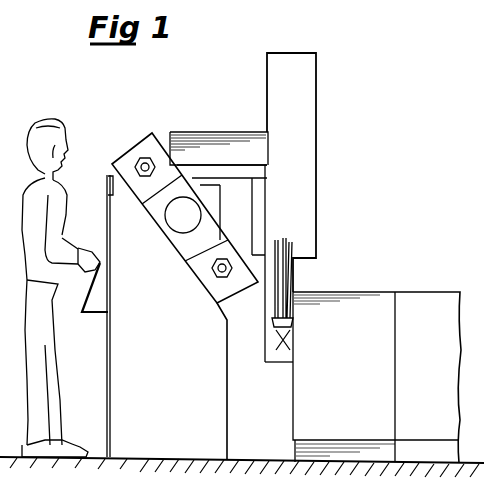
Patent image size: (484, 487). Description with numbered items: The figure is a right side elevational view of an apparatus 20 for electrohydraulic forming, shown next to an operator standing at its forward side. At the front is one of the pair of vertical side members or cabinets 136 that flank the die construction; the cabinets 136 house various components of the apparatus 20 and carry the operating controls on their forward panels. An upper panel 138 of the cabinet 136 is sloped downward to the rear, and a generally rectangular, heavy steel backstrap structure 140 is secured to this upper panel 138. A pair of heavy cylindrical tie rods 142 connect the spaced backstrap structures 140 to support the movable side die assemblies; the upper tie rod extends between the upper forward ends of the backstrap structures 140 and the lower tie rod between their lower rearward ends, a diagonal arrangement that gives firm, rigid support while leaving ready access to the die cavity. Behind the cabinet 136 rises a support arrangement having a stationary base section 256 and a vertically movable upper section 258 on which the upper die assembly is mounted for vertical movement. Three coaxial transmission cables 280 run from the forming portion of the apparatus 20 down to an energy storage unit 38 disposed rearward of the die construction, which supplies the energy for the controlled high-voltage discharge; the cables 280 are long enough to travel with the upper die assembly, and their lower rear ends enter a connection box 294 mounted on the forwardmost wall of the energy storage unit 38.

The apparatus 20 is at (159, 108).
The energy storage unit 38 is at (350, 348).
The vertical side member or cabinet 136 is at (175, 361).
The upper panel 138 is at (130, 190).
The backstrap structure 140 is at (148, 145).
The tie rods 142 is at (145, 176).
The stationary base section 256 is at (280, 208).
The vertically movable upper section 258 is at (228, 124).
The coaxial transmission cables 280 is at (290, 268).
The connection box 294 is at (285, 345).